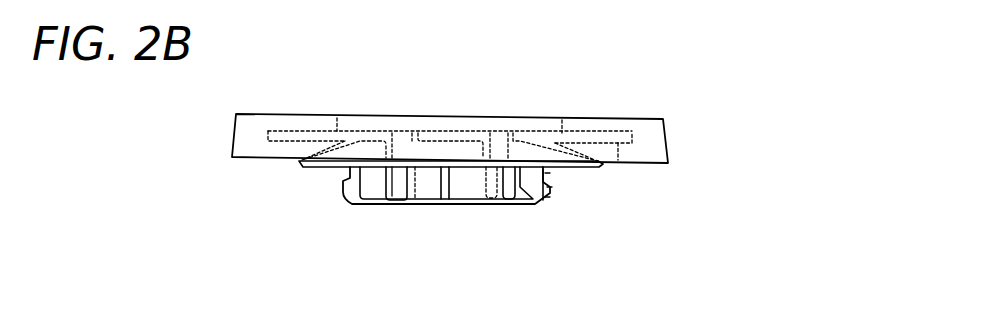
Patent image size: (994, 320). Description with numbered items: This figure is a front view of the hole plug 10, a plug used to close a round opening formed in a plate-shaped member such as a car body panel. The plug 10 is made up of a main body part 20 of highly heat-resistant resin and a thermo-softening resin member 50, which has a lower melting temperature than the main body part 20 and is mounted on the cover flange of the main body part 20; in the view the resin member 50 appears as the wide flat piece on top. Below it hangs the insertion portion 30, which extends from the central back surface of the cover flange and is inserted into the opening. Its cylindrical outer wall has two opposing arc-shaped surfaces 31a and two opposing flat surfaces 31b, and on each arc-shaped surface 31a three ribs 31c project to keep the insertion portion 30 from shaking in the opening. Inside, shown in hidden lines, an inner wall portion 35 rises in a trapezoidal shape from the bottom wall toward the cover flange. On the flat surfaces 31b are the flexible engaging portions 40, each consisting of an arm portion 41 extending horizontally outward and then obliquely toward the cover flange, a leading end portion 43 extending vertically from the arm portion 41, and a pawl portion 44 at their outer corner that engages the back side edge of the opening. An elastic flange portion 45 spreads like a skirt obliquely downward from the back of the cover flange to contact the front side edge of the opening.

The hole plug 10 is at (683, 124).
The main body part 20 is at (558, 222).
The insertion portion 30 is at (502, 217).
The arc-shaped surface 31a is at (470, 190).
The flat surface 31b is at (377, 180).
The rib 31c is at (450, 180).
The inner wall portion 35 is at (453, 130).
The engaging portion 40 is at (355, 200).
The arm portion 41 is at (547, 197).
The leading end portion 43 is at (548, 173).
The pawl portion 44 is at (550, 187).
The elastic flange portion 45 is at (335, 168).
The thermo-softening resin member 50 is at (290, 110).